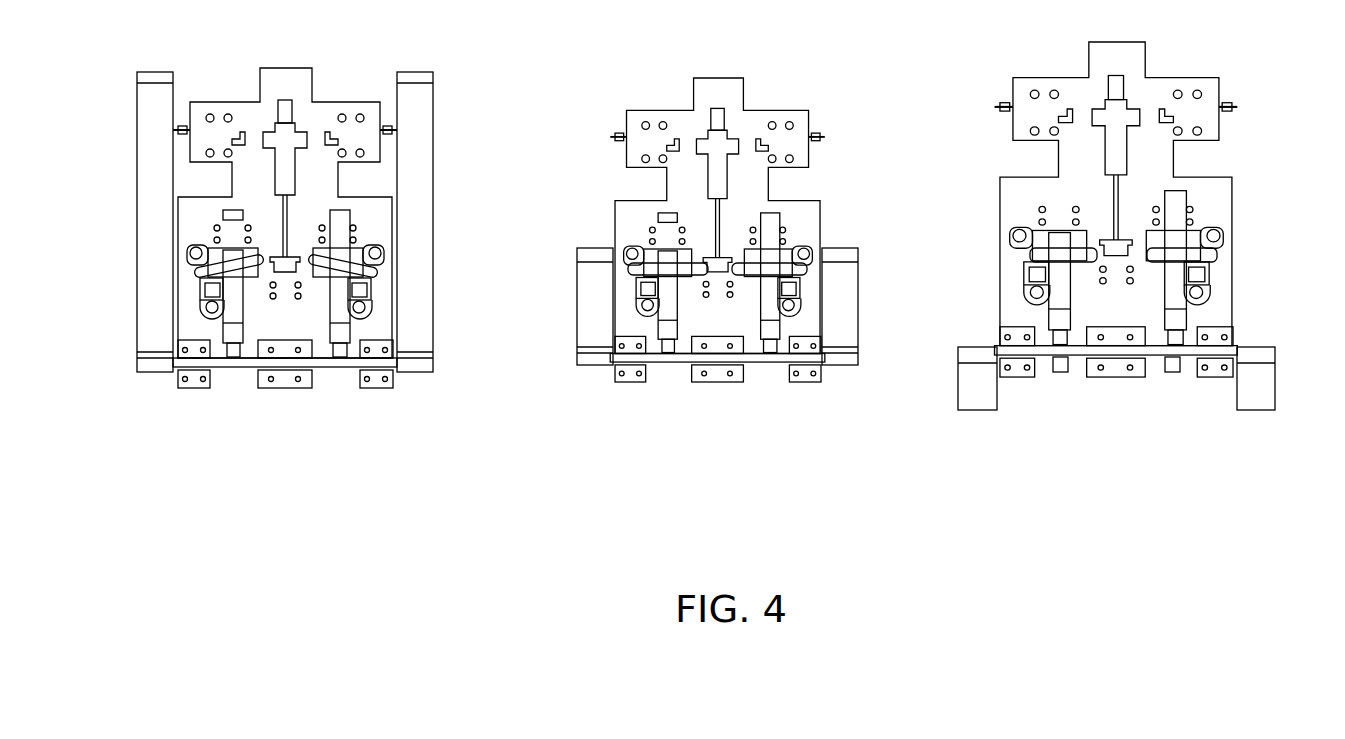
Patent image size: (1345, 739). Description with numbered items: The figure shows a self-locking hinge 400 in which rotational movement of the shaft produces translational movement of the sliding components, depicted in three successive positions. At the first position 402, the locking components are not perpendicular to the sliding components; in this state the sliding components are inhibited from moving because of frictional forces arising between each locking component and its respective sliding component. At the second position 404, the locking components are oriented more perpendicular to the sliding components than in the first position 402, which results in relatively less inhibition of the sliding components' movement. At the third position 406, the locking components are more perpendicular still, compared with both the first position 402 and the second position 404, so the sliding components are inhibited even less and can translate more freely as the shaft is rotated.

The gripper actuation sequence 400 is at (747, 569).
The position 402 is at (280, 479).
The position 404 is at (740, 477).
The position 406 is at (1153, 477).